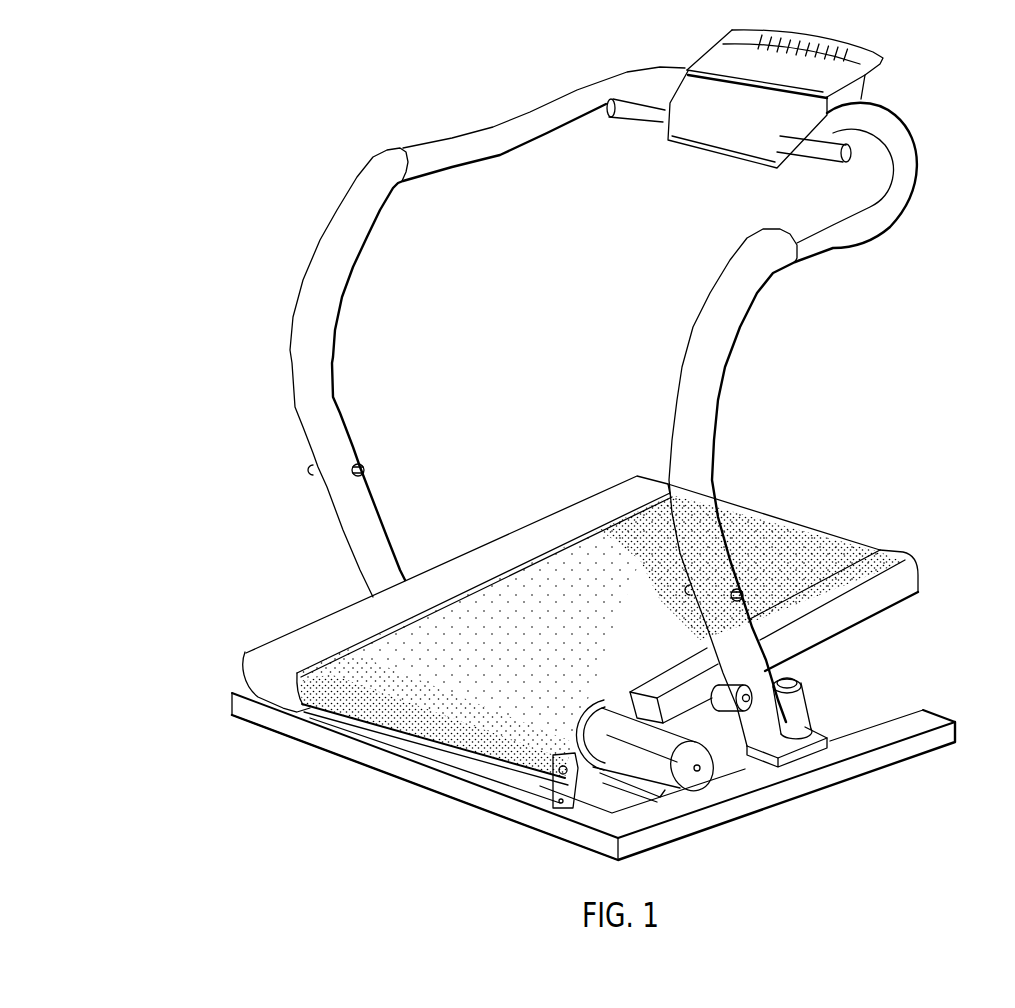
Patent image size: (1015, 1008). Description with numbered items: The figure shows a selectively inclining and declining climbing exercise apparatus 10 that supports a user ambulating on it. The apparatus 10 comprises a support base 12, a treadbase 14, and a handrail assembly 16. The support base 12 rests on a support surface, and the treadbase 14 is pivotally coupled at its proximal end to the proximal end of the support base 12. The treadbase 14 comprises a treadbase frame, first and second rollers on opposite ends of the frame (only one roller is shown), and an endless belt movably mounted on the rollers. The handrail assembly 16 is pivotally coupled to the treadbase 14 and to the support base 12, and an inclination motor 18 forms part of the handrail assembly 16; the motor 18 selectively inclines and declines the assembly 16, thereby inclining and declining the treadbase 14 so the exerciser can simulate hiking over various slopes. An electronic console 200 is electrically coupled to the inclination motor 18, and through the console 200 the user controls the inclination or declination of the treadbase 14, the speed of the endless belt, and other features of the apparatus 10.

The selectively inclining and declining climbing exercise apparatus 10 is at (240, 339).
The support base 12 is at (868, 762).
The treadbase 14 is at (823, 556).
The handrail assembly 16 is at (909, 208).
The inclination motor 18 is at (800, 713).
The electronic console 200 is at (883, 56).